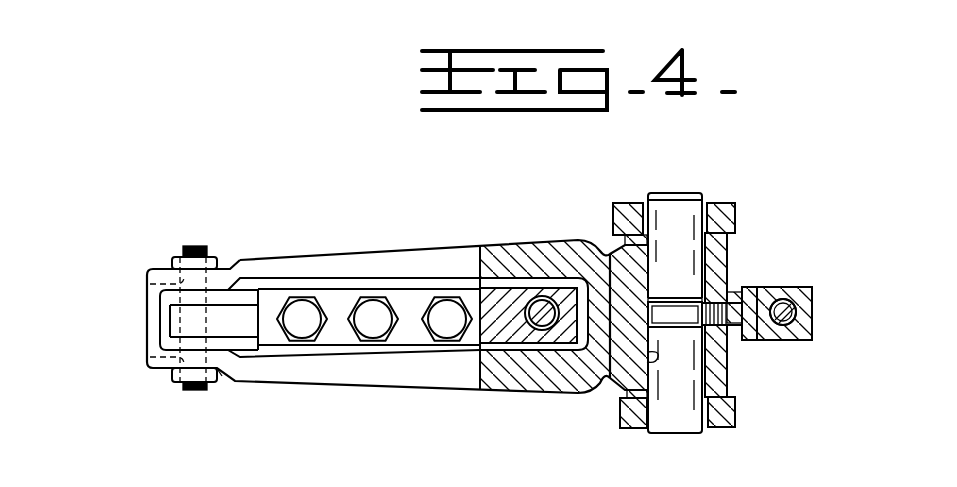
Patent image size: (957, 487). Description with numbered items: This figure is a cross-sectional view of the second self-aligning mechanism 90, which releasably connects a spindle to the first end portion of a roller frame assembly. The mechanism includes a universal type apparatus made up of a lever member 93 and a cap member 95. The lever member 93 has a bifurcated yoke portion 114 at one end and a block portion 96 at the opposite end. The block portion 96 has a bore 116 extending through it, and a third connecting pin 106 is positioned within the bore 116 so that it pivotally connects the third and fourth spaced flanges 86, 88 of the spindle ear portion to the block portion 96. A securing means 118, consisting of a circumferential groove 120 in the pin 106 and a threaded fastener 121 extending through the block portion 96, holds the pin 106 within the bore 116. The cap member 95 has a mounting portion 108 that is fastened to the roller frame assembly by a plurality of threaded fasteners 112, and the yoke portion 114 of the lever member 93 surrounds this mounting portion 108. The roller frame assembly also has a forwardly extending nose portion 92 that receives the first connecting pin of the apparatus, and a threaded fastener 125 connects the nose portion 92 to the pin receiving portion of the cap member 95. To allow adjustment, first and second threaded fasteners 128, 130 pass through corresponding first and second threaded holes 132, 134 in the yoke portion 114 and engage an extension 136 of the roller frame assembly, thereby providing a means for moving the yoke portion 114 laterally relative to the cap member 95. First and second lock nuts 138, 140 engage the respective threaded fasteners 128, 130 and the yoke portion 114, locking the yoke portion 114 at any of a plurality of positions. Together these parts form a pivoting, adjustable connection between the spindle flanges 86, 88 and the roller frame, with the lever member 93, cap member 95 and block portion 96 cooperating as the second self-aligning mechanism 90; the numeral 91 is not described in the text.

The third spaced flange 86 is at (724, 424).
The fourth spaced flange 88 is at (724, 204).
The second self-aligning mechanism 90 is at (528, 400).
The rod end eye 91 is at (602, 218).
The forwardly extending nose portion 92 is at (759, 289).
The lever member 93 is at (443, 254).
The cap member 95 is at (467, 338).
The block portion 96 is at (720, 258).
The third connecting pin 106 is at (673, 424).
The mounting portion 108 is at (474, 289).
The threaded fasteners 112 is at (367, 307).
The bifurcated yoke portion 114 is at (370, 384).
The bore 116 is at (647, 360).
The securing means 118 is at (672, 293).
The circumferential groove 120 is at (651, 312).
The threaded fastener 121 is at (727, 333).
The threaded fastener 125 is at (812, 301).
The first threaded fastener 128 is at (187, 250).
The second threaded fastener 130 is at (185, 391).
The first threaded hole 132 is at (150, 283).
The second threaded hole 134 is at (150, 357).
The extension 136 is at (232, 320).
The first lock nut 138 is at (170, 265).
The second lock nut 140 is at (213, 373).